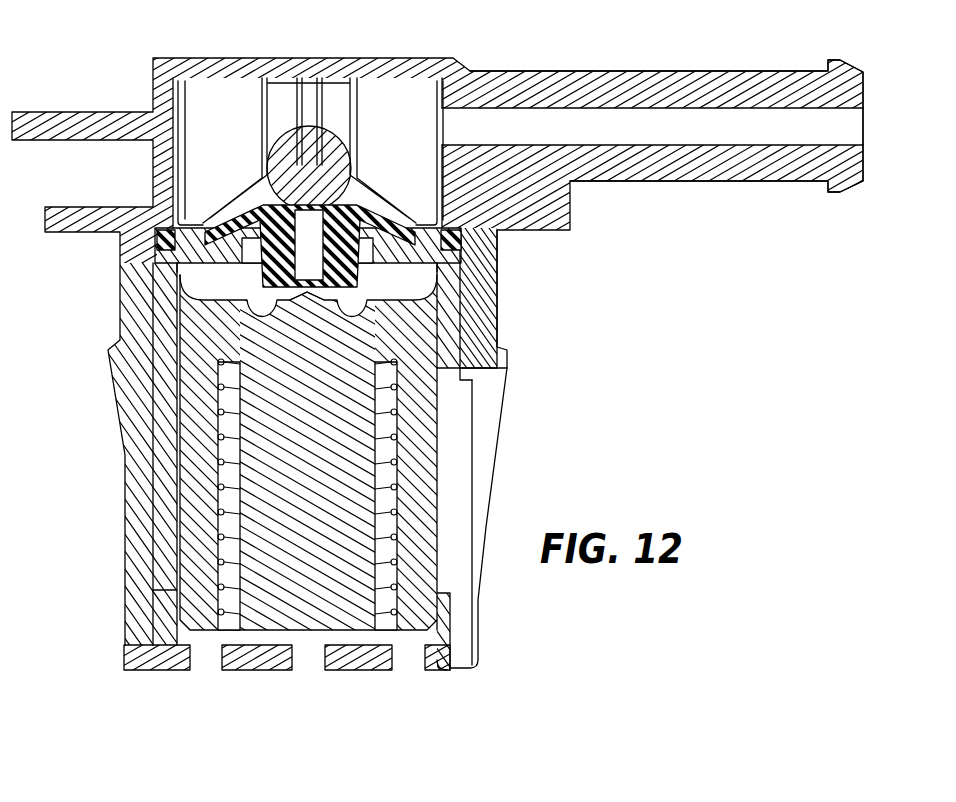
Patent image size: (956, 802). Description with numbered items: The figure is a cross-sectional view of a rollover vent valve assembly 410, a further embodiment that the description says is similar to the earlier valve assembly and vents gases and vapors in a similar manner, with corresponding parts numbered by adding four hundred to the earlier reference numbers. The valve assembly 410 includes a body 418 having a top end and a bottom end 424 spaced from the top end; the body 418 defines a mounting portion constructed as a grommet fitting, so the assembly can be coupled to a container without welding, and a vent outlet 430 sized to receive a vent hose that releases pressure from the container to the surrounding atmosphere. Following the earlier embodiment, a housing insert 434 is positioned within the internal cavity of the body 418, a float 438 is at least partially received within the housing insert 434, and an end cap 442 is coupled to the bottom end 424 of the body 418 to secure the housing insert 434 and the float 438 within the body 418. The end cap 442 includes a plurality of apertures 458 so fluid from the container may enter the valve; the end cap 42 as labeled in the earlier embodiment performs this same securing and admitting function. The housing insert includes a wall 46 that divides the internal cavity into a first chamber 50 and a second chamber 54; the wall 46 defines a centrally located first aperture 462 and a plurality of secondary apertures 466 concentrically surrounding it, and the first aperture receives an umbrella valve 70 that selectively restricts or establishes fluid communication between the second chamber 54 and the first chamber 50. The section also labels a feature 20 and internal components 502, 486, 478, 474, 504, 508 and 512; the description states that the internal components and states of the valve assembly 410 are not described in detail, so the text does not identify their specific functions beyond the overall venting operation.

The rollover vent valve assembly 410 is at (545, 32).
The body 418 is at (205, 78).
The bottom end 424 is at (210, 4).
The vent outlet 430 is at (733, 85).
The end cap 42 is at (685, 127).
The second chamber 54 is at (493, 155).
The umbrella valve 70 is at (437, 180).
The seal 20 is at (425, 212).
The wall 46 is at (470, 272).
The first chamber 50 is at (462, 320).
The ball 502 is at (328, 157).
The stem 486 is at (308, 232).
The O-ring 478 is at (157, 237).
The cover 474 is at (128, 300).
The float 438 is at (438, 468).
The first aperture 462 is at (247, 268).
The secondary apertures 466 is at (373, 265).
The piston boss 504 is at (307, 300).
The spring 508 is at (238, 522).
The spring 512 is at (385, 560).
The housing insert 434 is at (455, 408).
The apertures 458 is at (203, 663).
The end cap 442 is at (447, 672).